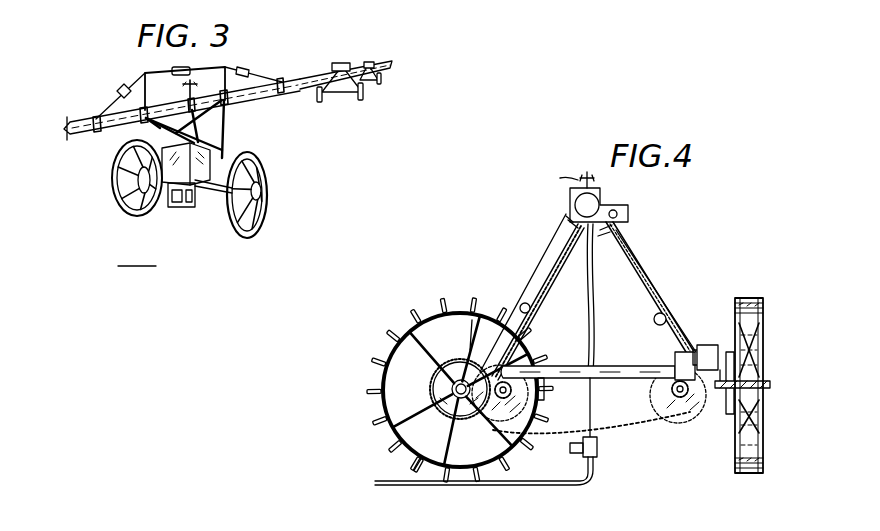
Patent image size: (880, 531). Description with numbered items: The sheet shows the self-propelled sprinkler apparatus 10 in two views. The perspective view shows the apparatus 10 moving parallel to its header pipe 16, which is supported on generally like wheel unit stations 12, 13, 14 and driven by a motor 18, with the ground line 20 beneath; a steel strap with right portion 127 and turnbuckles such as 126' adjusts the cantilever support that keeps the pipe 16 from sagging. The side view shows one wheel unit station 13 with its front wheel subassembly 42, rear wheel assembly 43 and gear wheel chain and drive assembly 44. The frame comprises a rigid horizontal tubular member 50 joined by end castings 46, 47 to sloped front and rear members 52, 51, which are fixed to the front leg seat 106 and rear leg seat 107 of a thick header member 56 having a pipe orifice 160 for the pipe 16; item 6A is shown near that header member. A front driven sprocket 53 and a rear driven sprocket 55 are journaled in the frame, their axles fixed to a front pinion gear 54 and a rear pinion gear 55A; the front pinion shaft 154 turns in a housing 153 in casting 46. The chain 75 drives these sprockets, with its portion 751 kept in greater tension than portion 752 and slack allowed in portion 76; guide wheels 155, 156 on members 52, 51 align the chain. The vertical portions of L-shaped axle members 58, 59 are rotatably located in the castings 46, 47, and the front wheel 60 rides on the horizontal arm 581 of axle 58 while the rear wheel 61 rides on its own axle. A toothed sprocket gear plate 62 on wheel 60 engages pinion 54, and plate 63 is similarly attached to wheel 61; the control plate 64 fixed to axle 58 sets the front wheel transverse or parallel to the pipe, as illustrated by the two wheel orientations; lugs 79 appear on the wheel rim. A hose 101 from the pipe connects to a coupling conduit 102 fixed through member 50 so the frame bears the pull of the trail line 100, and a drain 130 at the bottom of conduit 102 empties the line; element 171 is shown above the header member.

In FIG. 3, the apparatus 10 is at (93, 91).
In FIG. 3, the wheel unit station 12 is at (280, 215).
In FIG. 3, the wheel unit station 13 is at (368, 112).
In FIG. 4, the wheel unit station 13 is at (779, 355).
In FIG. 3, the wheel unit station 14 is at (389, 85).
In FIG. 3, the header pipe 16 is at (292, 82).
In FIG. 3, the motor 18 is at (172, 208).
In FIG. 3, the ground 20 is at (137, 258).
In FIG. 3, the turnbuckle 126' is at (120, 90).
In FIG. 3, the right portion of strap 127 is at (247, 70).
In FIG. 4, the plate 6A is at (622, 209).
In FIG. 4, the front wheel subassembly 42 is at (772, 386).
In FIG. 4, the rear wheel assembly 43 is at (441, 375).
In FIG. 4, the gear wheel chain and drive assembly 44 is at (649, 432).
In FIG. 4, the end casting 46 is at (738, 358).
In FIG. 4, the end casting 47 is at (472, 320).
In FIG. 4, the horizontal tubular member 50 is at (580, 358).
In FIG. 4, the rear sloped member 51 is at (515, 307).
In FIG. 4, the front sloped member 52 is at (632, 248).
In FIG. 4, the front driven sprocket 53 is at (675, 357).
In FIG. 4, the front pinion gear 54 is at (651, 389).
In FIG. 4, the rear driven sprocket 55 is at (552, 391).
In FIG. 4, the rear pinion gear 55A is at (500, 402).
In FIG. 4, the header member 56 is at (570, 196).
In FIG. 4, the front L-shaped axle member 58 is at (720, 390).
In FIG. 4, the rear L-shaped axle member 59 is at (445, 388).
In FIG. 4, the front wheel 60 is at (759, 432).
In FIG. 4, the rear wheel 61 is at (446, 304).
In FIG. 4, the front wheel sprocket gear plate 62 is at (730, 416).
In FIG. 4, the rear wheel gear plate 63 is at (457, 364).
In FIG. 4, the front wheel control plate 64 is at (717, 343).
In FIG. 4, the chain 75 is at (567, 272).
In FIG. 4, the chain portion 76 is at (565, 430).
In FIG. 4, the lug 79 is at (383, 350).
In FIG. 4, the trail line 100 is at (386, 480).
In FIG. 4, the hose 101 is at (594, 296).
In FIG. 4, the conduit 102 is at (592, 360).
In FIG. 4, the front leg seat 106 is at (613, 233).
In FIG. 4, the rear leg seat 107 is at (567, 224).
In FIG. 4, the drain 130 is at (596, 453).
In FIG. 4, the housing 153 is at (692, 397).
In FIG. 4, the pinion shaft 154 is at (681, 397).
In FIG. 4, the guide wheel 155 is at (662, 314).
In FIG. 4, the guide wheel 156 is at (527, 288).
In FIG. 4, the pipe orifice 160 is at (558, 178).
In FIG. 4, the pin 171 is at (588, 176).
In FIG. 4, the chain portion 751 is at (653, 318).
In FIG. 4, the chain portion 752 is at (530, 313).
In FIG. 4, the horizontal arm of axle 581 is at (769, 385).